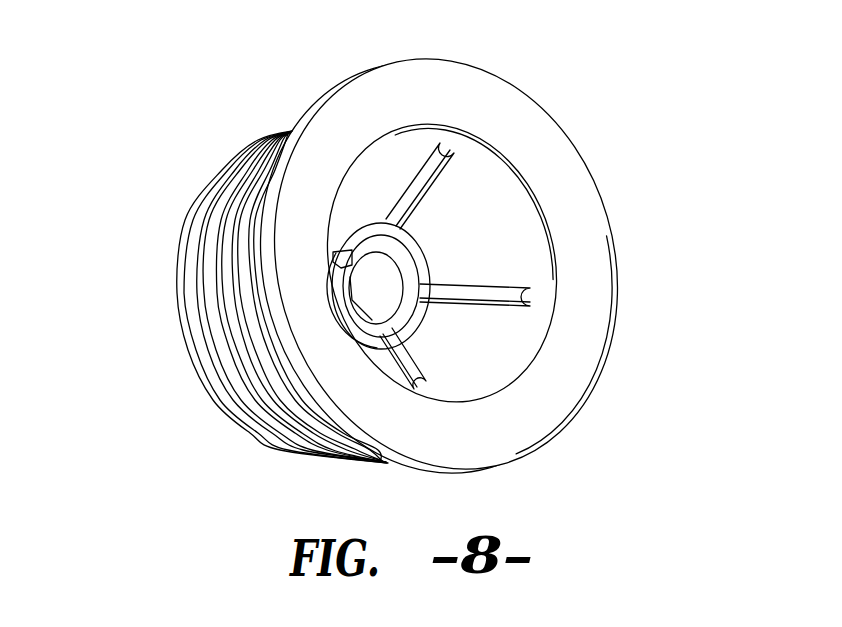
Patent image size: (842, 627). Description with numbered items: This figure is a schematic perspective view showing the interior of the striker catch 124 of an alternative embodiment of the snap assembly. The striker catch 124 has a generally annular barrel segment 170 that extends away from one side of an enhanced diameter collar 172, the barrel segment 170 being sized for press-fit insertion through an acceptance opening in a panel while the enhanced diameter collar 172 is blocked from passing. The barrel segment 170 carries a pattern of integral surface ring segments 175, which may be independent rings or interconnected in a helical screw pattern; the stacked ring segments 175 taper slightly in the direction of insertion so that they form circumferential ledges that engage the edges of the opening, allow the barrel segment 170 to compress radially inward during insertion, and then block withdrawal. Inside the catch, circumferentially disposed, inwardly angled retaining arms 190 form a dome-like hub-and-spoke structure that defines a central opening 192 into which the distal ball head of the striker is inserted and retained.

The striker catch 124 is at (620, 100).
The barrel segment 170 is at (175, 282).
The enhanced diameter collar 172 is at (615, 268).
The surface ring segments 175 is at (233, 188).
The retaining arms 190 is at (412, 263).
The central opening 192 is at (375, 268).